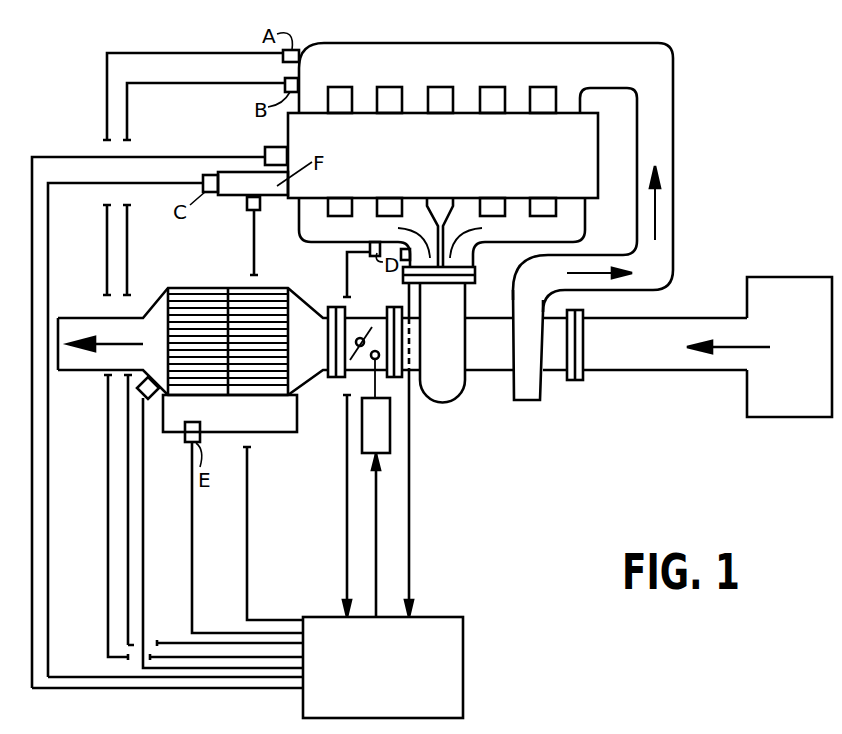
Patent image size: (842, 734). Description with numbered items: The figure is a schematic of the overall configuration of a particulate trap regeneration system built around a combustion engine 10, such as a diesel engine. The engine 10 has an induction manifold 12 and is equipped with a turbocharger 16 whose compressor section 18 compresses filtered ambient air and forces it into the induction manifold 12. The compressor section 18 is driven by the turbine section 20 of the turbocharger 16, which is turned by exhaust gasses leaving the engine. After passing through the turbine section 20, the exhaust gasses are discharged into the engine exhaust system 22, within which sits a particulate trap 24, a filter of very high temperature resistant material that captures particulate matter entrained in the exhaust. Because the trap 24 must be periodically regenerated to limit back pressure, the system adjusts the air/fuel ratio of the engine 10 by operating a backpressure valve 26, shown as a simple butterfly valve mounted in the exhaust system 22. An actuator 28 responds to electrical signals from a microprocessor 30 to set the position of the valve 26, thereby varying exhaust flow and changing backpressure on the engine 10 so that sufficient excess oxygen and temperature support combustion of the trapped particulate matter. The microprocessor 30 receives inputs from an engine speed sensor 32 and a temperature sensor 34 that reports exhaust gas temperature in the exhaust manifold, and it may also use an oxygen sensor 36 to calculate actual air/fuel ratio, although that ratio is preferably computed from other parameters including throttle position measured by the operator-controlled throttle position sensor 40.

The combustion engine 10 is at (518, 153).
The induction manifold 12 is at (490, 75).
The turbocharger 16 is at (478, 385).
The compressor section 18 is at (534, 352).
The turbine section 20 is at (450, 318).
The engine exhaust system 22 is at (364, 301).
The particulate trap 24 is at (283, 281).
The backpressure valve 26 is at (352, 369).
The actuator 28 is at (380, 437).
The microprocessor 30 is at (447, 637).
The engine speed sensor 32 is at (268, 148).
The temperature sensor 34 is at (382, 243).
The oxygen sensor 36 is at (152, 400).
The throttle position sensor 40 is at (247, 209).